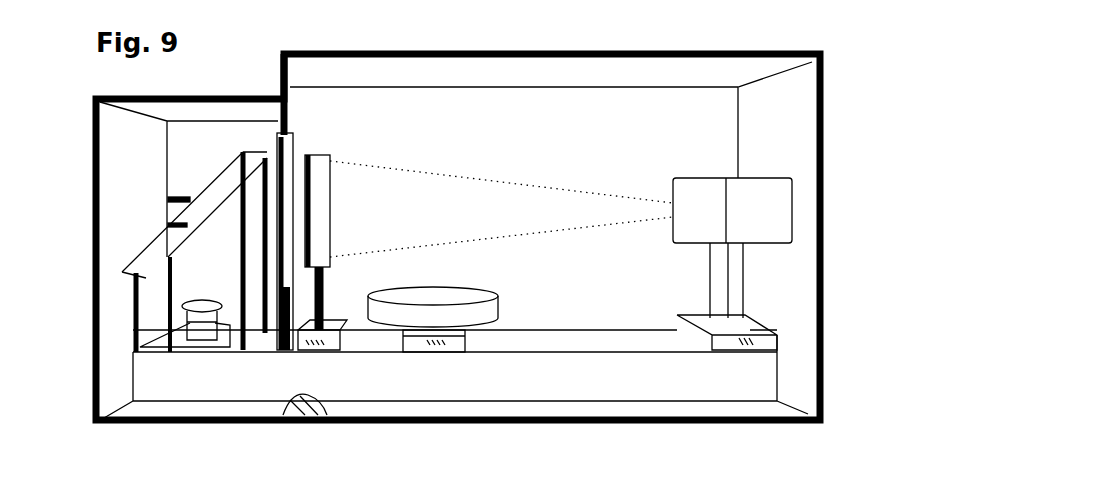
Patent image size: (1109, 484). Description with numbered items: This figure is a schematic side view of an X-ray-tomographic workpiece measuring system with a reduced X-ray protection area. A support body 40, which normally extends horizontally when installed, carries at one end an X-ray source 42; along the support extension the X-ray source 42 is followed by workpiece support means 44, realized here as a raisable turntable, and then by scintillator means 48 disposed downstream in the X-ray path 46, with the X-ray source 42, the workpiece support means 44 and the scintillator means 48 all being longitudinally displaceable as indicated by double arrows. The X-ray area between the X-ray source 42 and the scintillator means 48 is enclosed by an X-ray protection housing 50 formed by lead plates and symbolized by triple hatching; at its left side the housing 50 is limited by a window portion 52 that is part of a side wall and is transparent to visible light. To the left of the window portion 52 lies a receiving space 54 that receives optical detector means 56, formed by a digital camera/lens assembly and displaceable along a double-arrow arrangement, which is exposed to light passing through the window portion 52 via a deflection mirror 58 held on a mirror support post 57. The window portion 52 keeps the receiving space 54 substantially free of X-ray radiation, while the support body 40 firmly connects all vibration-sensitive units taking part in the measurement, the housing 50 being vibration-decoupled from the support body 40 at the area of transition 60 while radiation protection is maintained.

The support body 40 is at (612, 390).
The X-ray source 42 is at (757, 220).
The workpiece support means 44 is at (480, 310).
The X-ray path 46 is at (460, 172).
The scintillator means 48 is at (318, 178).
The X-ray protection housing 50 is at (827, 117).
The window portion 52 is at (305, 158).
The receiving space 54 is at (205, 146).
The optical detector means 56 is at (190, 322).
The mirror support post 57 is at (190, 293).
The deflection mirror 58 is at (163, 222).
The area of transition 60 is at (293, 395).